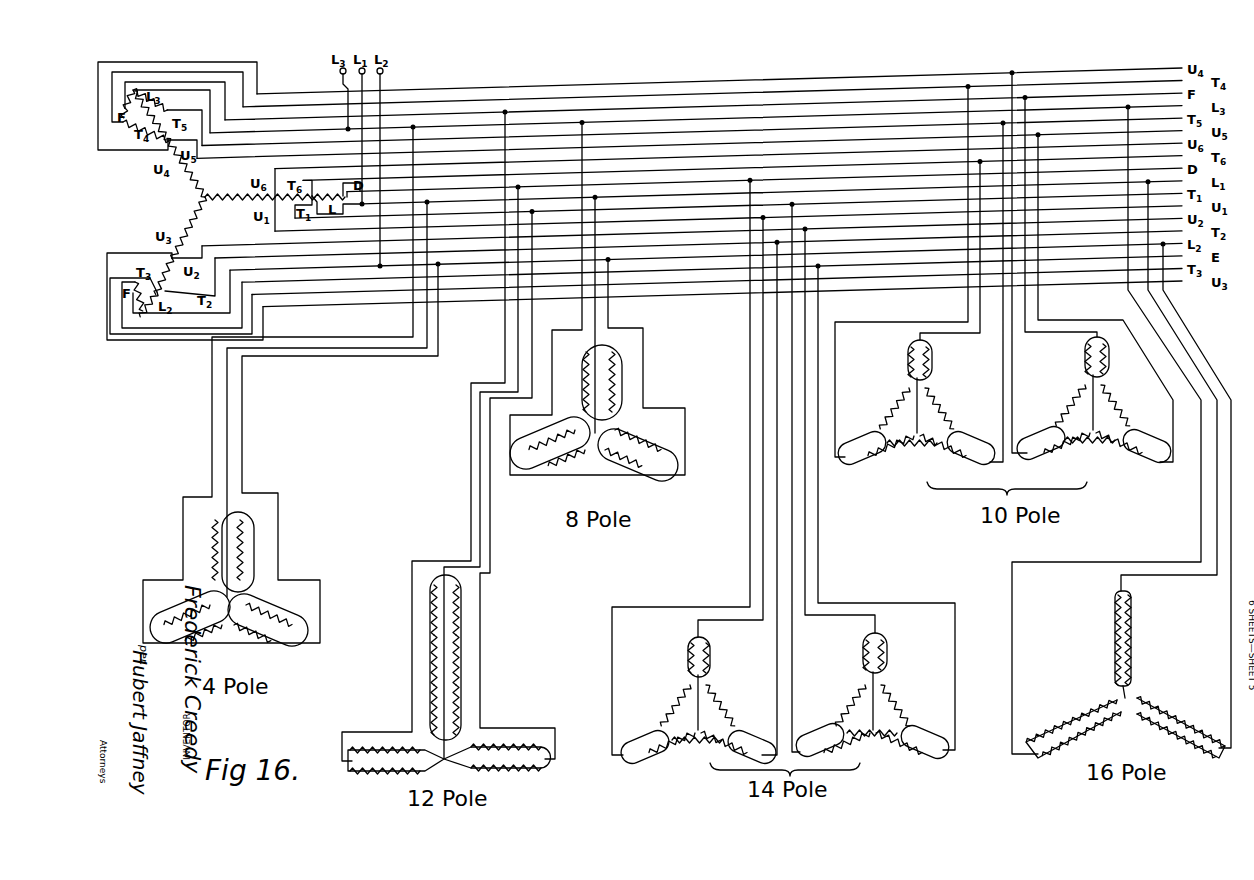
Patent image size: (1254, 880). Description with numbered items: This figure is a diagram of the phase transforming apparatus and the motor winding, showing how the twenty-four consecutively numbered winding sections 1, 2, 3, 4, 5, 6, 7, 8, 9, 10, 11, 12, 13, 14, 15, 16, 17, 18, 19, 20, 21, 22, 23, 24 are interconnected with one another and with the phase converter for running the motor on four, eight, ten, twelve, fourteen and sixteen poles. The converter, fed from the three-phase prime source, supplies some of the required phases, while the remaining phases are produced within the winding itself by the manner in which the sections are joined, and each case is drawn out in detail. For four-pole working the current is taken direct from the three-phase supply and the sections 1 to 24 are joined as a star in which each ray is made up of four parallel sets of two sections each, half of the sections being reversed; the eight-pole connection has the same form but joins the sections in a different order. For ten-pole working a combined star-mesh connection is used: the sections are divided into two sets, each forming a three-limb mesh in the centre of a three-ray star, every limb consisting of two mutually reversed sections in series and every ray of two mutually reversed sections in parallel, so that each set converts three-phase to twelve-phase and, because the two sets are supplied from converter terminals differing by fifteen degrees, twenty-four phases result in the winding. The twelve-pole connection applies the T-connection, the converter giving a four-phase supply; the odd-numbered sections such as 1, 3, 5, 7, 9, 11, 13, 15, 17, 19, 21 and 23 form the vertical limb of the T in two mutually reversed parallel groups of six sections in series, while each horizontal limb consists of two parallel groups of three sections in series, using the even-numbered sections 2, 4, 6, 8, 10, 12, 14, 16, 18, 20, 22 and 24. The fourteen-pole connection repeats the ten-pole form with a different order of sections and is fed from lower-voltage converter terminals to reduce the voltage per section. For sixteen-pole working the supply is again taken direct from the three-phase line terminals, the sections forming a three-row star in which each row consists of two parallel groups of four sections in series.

The motor winding section 1 is at (650, 514).
The motor winding section 2 is at (709, 607).
The motor winding section 3 is at (653, 587).
The motor winding section 4 is at (651, 570).
The motor winding section 5 is at (723, 592).
The motor winding section 6 is at (692, 577).
The motor winding section 7 is at (699, 573).
The motor winding section 8 is at (720, 600).
The motor winding section 9 is at (629, 579).
The motor winding section 10 is at (683, 580).
The motor winding section 11 is at (698, 562).
The motor winding section 12 is at (671, 618).
The motor winding section 13 is at (666, 510).
The motor winding section 14 is at (707, 596).
The motor winding section 15 is at (644, 570).
The motor winding section 16 is at (647, 571).
The motor winding section 17 is at (729, 591).
The motor winding section 18 is at (680, 554).
The motor winding section 19 is at (693, 574).
The motor winding section 20 is at (722, 577).
The motor winding section 21 is at (620, 592).
The motor winding section 22 is at (677, 556).
The motor winding section 23 is at (691, 566).
The motor winding section 24 is at (685, 618).